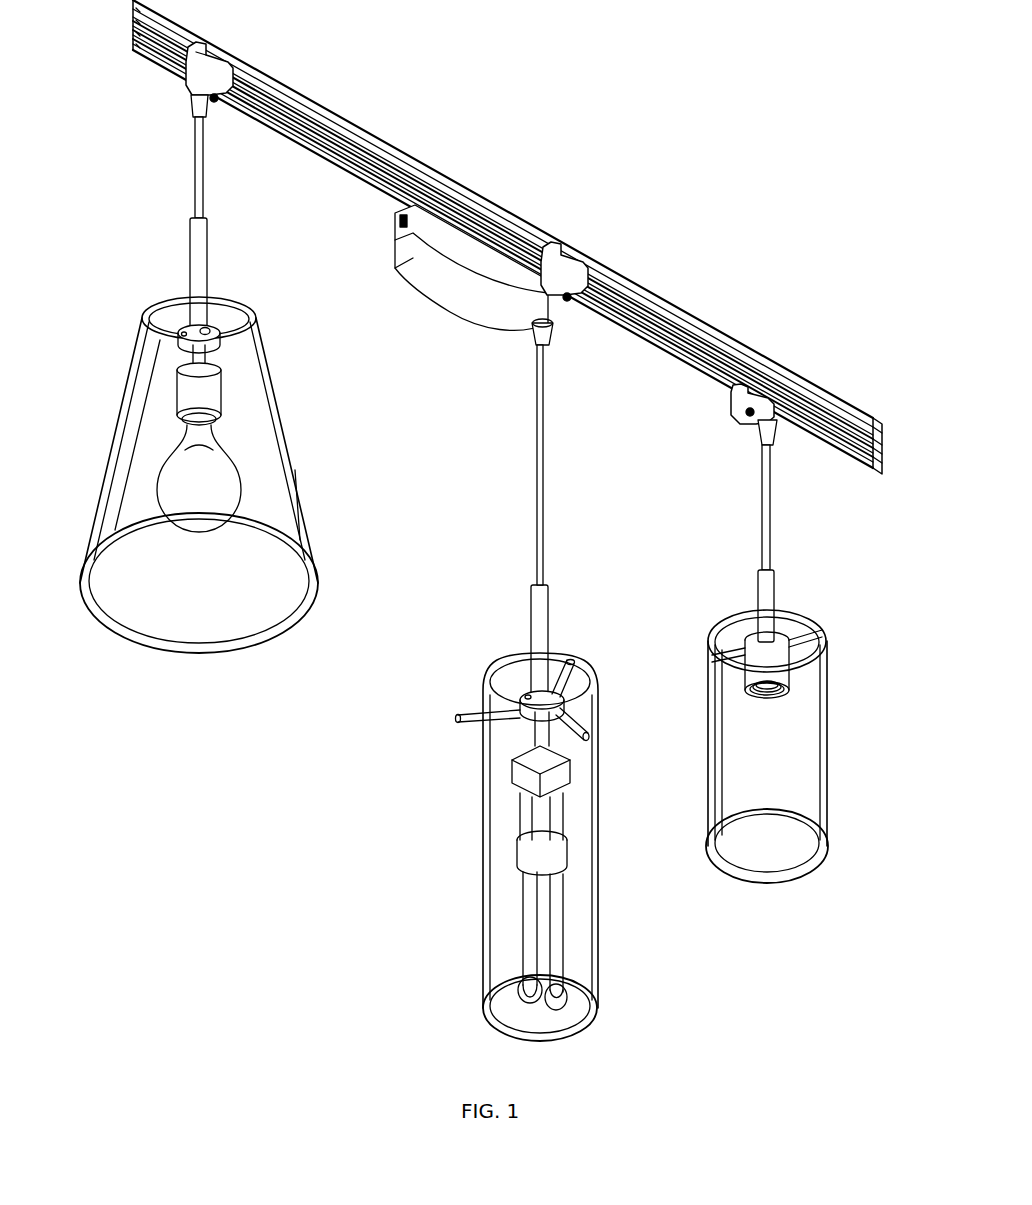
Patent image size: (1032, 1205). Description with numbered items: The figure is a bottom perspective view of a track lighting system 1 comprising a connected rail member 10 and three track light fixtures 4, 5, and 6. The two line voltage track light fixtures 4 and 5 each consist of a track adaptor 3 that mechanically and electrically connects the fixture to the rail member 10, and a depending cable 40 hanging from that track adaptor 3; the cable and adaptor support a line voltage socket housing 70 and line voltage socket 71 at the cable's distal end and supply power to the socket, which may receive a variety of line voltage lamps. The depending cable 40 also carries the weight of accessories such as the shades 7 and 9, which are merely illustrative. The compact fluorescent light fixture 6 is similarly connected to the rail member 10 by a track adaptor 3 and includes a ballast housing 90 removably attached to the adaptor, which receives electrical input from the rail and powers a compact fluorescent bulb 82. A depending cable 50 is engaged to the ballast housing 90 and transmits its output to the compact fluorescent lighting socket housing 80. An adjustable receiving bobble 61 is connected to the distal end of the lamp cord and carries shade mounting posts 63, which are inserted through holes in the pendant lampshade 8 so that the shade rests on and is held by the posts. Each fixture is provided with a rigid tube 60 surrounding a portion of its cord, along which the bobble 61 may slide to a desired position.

The track lighting system 1 is at (481, 522).
The rail member 10 is at (122, 26).
The track adaptor 3 is at (217, 60).
The line voltage track light fixture 4 is at (473, 461).
The line voltage track light fixture 5 is at (809, 693).
The compact fluorescent light fixture 6 is at (533, 695).
The shade 7 is at (280, 414).
The pendant lampshade 8 is at (500, 660).
The shade 9 is at (740, 615).
The depending cable 40 is at (197, 185).
The depending cable 50 is at (546, 438).
The rigid tube 60 is at (207, 262).
The adjustable receiving bobble 61 is at (217, 335).
The shade mounting post 63 is at (570, 670).
The line voltage socket housing 70 is at (473, 554).
The line voltage socket 71 is at (772, 695).
The compact fluorescent lighting socket housing 80 is at (550, 802).
The compact fluorescent bulb 82 is at (557, 1000).
The ballast housing 90 is at (428, 272).